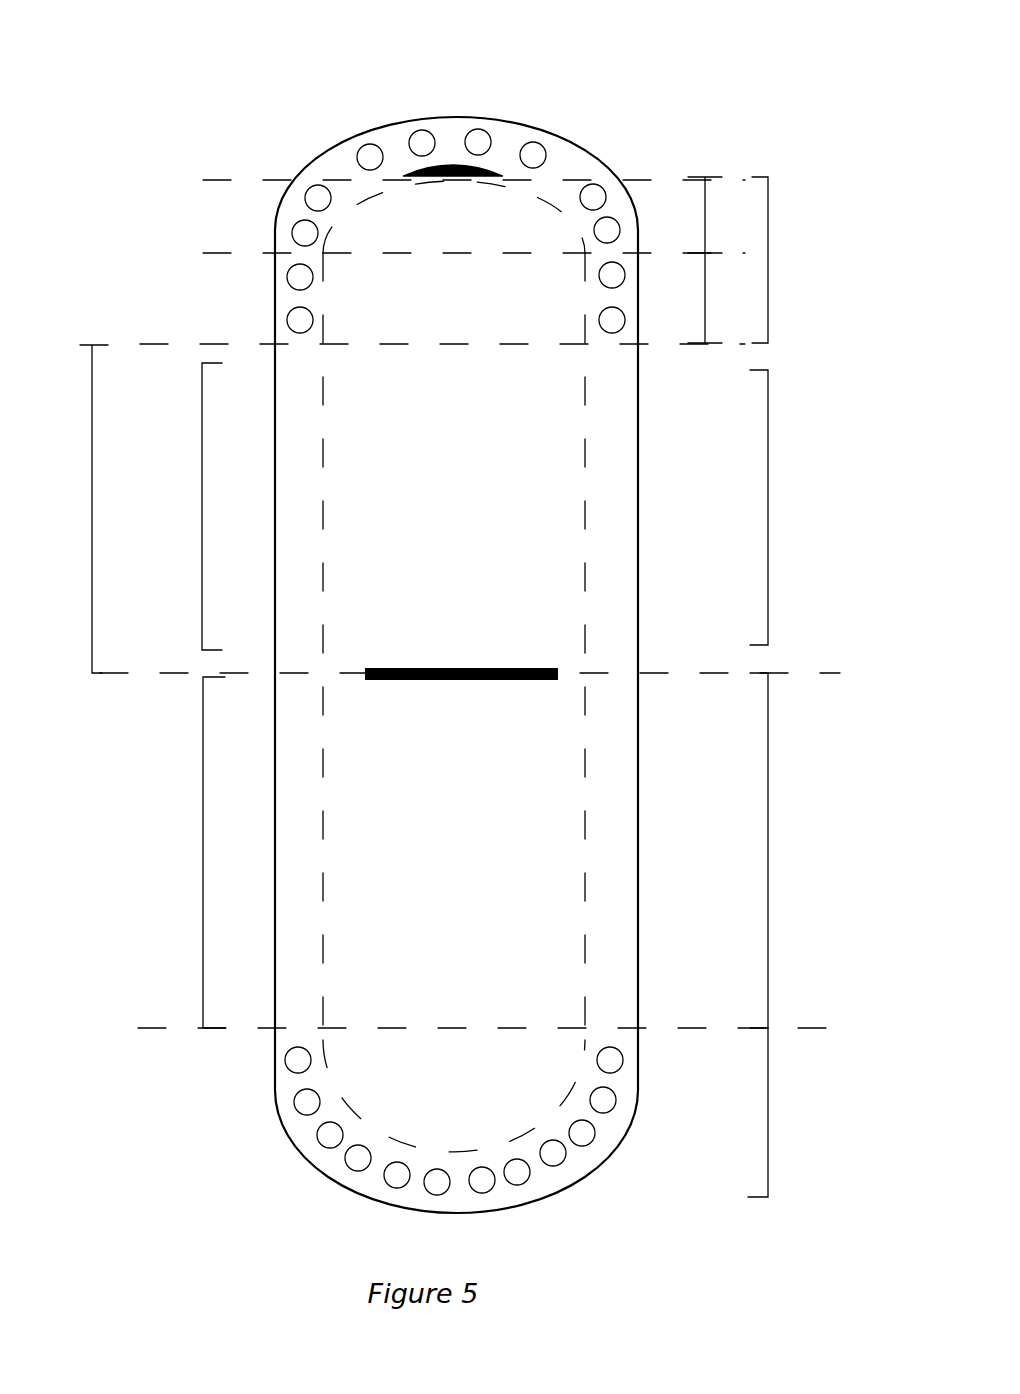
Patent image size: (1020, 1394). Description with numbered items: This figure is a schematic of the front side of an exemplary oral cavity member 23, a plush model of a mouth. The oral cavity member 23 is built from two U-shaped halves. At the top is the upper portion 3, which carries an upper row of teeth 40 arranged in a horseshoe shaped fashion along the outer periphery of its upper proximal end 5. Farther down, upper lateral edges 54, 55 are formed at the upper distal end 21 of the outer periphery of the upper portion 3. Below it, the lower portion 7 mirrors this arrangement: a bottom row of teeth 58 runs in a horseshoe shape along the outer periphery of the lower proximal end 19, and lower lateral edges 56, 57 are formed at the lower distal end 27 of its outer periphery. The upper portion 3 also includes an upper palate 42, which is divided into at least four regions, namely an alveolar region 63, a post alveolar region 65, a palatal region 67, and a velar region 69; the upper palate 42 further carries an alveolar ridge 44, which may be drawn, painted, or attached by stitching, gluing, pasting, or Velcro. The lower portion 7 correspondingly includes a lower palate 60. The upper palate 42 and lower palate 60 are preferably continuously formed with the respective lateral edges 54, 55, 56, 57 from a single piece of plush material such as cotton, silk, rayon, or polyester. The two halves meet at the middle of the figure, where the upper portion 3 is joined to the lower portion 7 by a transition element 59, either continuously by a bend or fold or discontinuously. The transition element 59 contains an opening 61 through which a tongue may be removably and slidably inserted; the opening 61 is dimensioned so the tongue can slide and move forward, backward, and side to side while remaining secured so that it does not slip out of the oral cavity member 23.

The upper portion 3 is at (566, 416).
The upper proximal end 5 is at (781, 260).
The lower portion 7 is at (534, 850).
The lower proximal end 19 is at (783, 1112).
The upper distal end 21 is at (490, 506).
The oral cavity member 23 is at (672, 122).
The lower distal end 27 is at (486, 850).
The upper row of teeth 40 is at (368, 148).
The upper palate 42 is at (556, 596).
The alveolar ridge 44 is at (490, 167).
The upper lateral edge 54 is at (300, 435).
The upper lateral edge 55 is at (603, 507).
The lower lateral edge 56 is at (302, 740).
The lower lateral edge 57 is at (605, 768).
The bottom row of teeth 58 is at (292, 1099).
The transition element 59 is at (595, 672).
The lower palate 60 is at (370, 1119).
The opening 61 is at (365, 672).
The alveolar region 63 is at (404, 164).
The post alveolar region 65 is at (706, 215).
The palatal region 67 is at (706, 298).
The velar region 69 is at (76, 509).